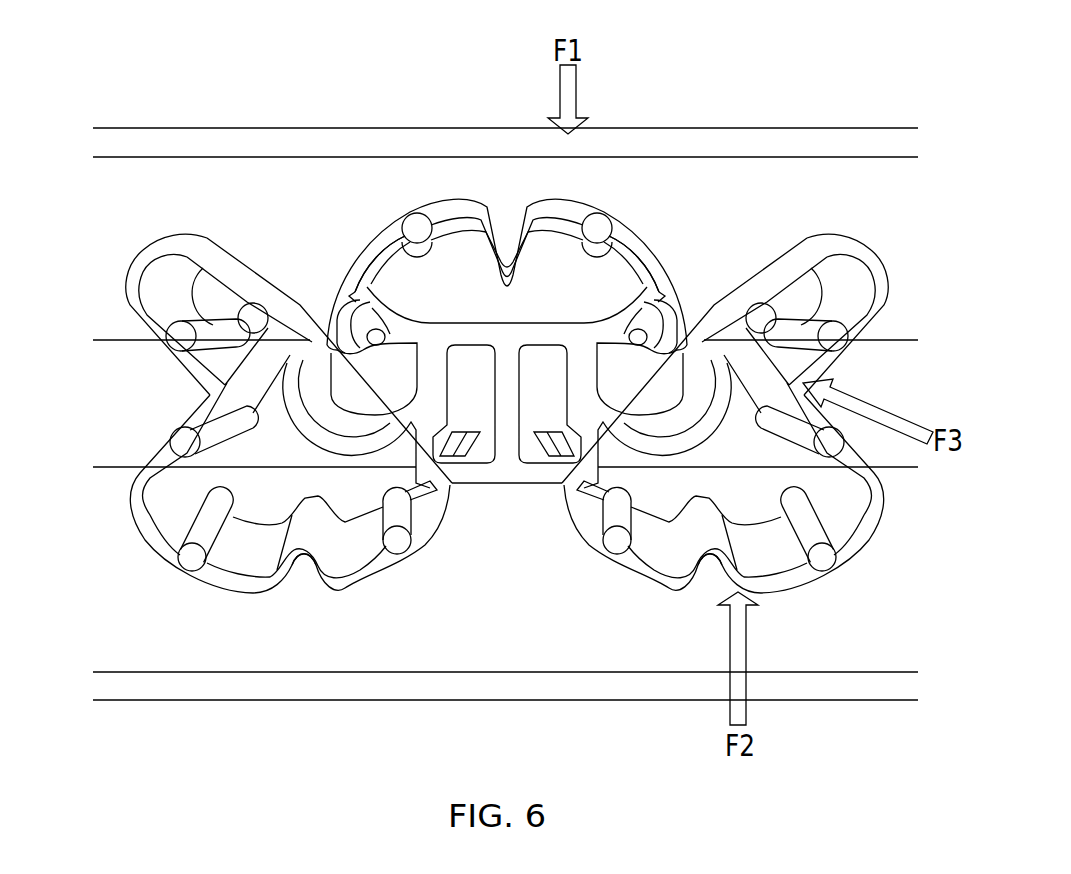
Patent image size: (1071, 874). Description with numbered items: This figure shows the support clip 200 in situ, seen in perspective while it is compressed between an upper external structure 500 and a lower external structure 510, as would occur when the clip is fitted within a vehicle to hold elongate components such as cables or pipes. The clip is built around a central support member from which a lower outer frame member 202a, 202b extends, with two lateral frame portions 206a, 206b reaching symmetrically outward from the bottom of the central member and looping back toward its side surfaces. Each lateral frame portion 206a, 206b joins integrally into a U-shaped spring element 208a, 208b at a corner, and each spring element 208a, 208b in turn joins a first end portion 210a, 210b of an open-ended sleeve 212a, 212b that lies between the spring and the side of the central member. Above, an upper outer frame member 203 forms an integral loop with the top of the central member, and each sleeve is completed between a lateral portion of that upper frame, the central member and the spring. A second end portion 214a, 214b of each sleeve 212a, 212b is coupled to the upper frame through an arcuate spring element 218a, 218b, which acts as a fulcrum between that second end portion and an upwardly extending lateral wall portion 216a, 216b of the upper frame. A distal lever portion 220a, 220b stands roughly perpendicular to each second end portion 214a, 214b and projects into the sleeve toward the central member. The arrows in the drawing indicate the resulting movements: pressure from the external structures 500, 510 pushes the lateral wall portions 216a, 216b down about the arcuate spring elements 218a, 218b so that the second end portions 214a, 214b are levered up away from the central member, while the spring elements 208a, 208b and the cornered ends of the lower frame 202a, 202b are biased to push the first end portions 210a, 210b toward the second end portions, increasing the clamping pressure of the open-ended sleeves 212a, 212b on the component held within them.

The support clip 200 is at (135, 115).
The lower outer frame member 202a is at (150, 422).
The lower outer frame member 202b is at (893, 449).
The upper outer frame member 203 is at (443, 207).
The lateral frame portion 206a is at (153, 533).
The lateral frame portion 206b is at (848, 575).
The spring element 208a is at (98, 262).
The spring element 208b is at (875, 358).
The first end portion 210a is at (302, 363).
The first end portion 210b is at (712, 363).
The open-ended sleeve 212a is at (357, 440).
The open-ended sleeve 212b is at (690, 473).
The second end portion 214a is at (452, 484).
The second end portion 214b is at (565, 484).
The lateral wall portion 216a is at (418, 213).
The lateral wall portion 216b is at (612, 212).
The arcuate spring element 218a is at (362, 280).
The arcuate spring element 218b is at (641, 292).
The distal lever portion 220a is at (363, 333).
The distal lever portion 220b is at (698, 330).
The external structure 500 is at (853, 225).
The external structure 510 is at (200, 647).